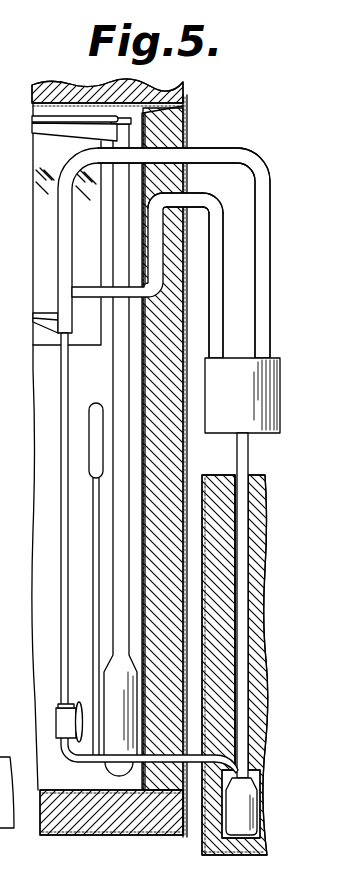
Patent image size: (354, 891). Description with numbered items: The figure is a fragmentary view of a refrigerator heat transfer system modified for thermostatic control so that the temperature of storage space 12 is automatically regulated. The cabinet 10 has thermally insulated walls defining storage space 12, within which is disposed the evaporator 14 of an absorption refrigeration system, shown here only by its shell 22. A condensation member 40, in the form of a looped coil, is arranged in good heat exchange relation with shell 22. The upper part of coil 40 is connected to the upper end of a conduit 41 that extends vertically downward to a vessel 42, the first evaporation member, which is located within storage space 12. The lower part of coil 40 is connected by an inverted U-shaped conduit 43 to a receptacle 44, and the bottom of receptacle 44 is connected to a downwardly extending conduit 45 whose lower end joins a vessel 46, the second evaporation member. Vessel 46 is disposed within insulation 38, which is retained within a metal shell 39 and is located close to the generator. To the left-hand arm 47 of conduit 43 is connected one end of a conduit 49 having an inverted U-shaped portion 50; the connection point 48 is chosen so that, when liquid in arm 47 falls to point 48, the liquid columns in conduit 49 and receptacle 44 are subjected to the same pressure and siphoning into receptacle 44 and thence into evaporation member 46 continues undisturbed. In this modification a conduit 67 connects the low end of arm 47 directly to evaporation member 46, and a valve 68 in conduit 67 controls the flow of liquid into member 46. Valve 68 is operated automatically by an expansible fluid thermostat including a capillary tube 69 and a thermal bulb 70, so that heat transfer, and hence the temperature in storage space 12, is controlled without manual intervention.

The cabinet 10 is at (189, 93).
The storage space 12 is at (56, 443).
The evaporator 14 is at (42, 346).
The shell 22 is at (38, 116).
The insulation 38 is at (266, 527).
The metal shell 39 is at (257, 477).
The condensation member 40 is at (45, 143).
The conduit 41 is at (116, 355).
The vessel 42 is at (105, 768).
The inverted U-shaped conduit 43 is at (236, 152).
The receptacle 44 is at (282, 400).
The conduit 45 is at (243, 596).
The vessel 46 is at (255, 808).
The left-hand arm 47 is at (60, 250).
The connection point 48 is at (74, 288).
The conduit 49 is at (232, 289).
The inverted U-shaped portion 50 is at (204, 197).
The conduit 67 is at (61, 494).
The valve 68 is at (54, 722).
The capillary tube 69 is at (96, 596).
The thermal bulb 70 is at (95, 404).